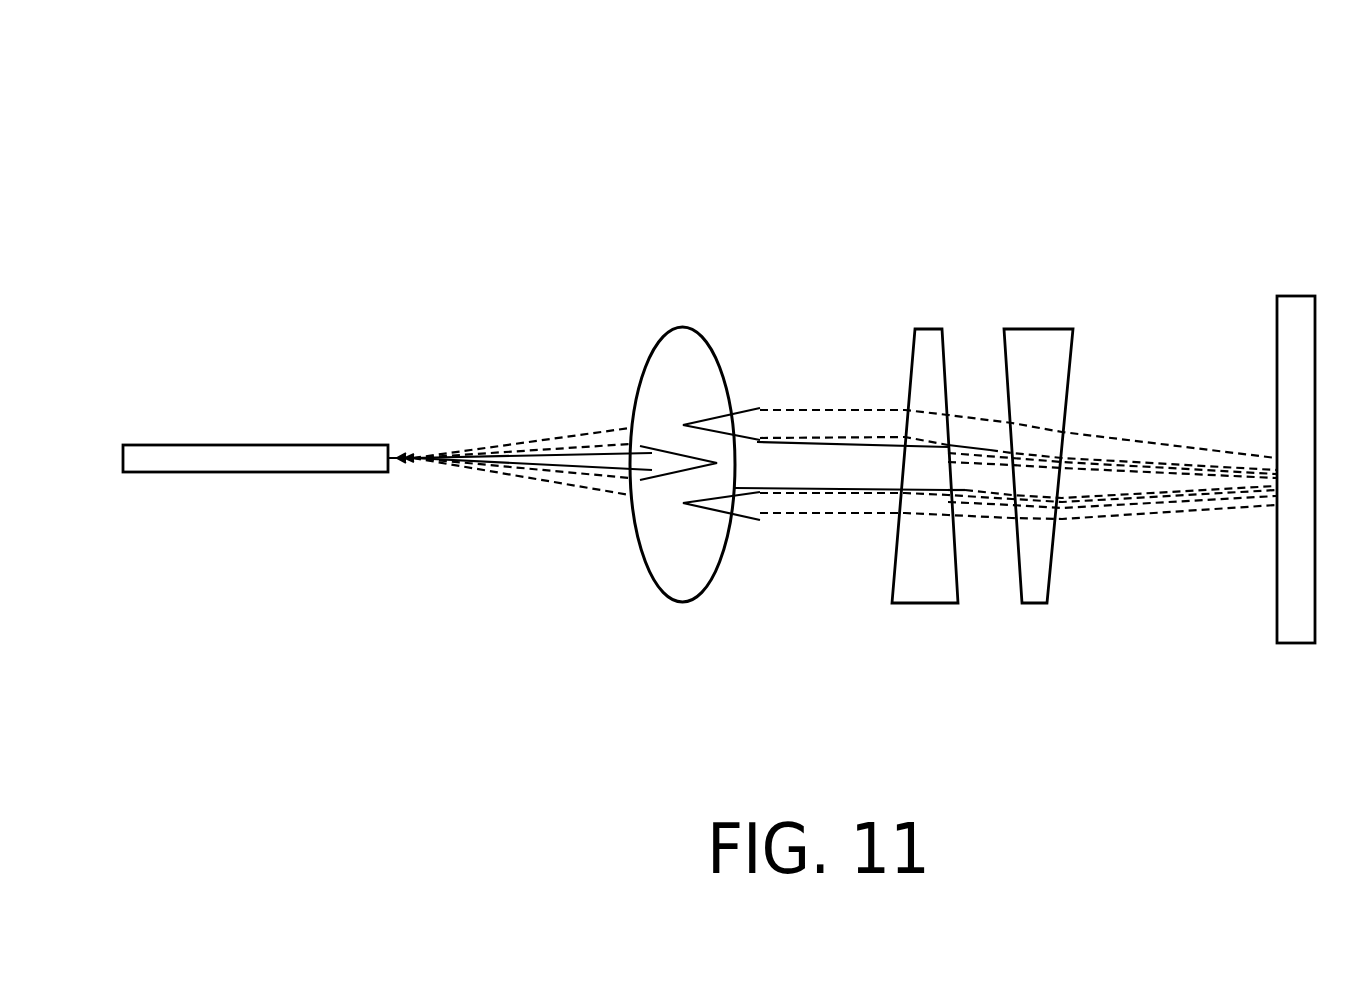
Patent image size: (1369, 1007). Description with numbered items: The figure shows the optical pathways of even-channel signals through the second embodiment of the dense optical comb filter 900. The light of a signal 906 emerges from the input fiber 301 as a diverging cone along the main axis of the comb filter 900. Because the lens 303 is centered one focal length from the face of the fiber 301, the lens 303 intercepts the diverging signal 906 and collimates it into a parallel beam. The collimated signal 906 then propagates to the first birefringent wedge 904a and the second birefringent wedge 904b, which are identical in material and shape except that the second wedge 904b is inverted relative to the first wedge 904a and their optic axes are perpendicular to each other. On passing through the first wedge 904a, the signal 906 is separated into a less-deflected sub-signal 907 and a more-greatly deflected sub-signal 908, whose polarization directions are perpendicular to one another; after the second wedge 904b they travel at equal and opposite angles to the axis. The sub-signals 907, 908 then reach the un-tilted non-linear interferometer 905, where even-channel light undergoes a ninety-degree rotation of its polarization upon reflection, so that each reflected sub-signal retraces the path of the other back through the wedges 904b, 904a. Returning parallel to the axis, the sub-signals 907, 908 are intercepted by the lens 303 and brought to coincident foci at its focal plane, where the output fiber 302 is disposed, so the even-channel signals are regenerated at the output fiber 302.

The dense optical comb filter 900 is at (769, 85).
The input fiber 301 is at (255, 400).
The output fiber 302 is at (243, 445).
The lens 303 is at (682, 327).
The first birefringent wedge 904a is at (927, 328).
The second birefringent wedge 904b is at (1037, 328).
The non-linear interferometer 905 is at (1298, 296).
The signal 906 is at (563, 467).
The first sub-signal 907 is at (518, 450).
The second sub-signal 908 is at (542, 473).